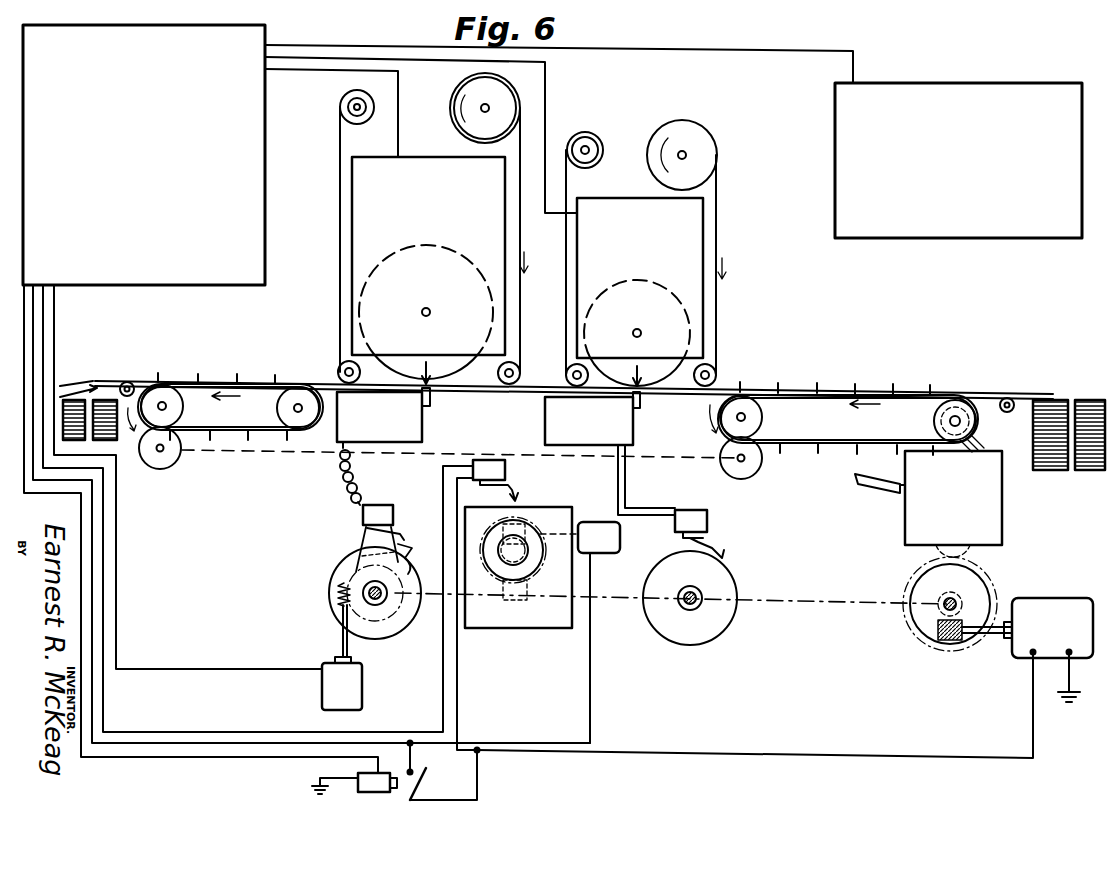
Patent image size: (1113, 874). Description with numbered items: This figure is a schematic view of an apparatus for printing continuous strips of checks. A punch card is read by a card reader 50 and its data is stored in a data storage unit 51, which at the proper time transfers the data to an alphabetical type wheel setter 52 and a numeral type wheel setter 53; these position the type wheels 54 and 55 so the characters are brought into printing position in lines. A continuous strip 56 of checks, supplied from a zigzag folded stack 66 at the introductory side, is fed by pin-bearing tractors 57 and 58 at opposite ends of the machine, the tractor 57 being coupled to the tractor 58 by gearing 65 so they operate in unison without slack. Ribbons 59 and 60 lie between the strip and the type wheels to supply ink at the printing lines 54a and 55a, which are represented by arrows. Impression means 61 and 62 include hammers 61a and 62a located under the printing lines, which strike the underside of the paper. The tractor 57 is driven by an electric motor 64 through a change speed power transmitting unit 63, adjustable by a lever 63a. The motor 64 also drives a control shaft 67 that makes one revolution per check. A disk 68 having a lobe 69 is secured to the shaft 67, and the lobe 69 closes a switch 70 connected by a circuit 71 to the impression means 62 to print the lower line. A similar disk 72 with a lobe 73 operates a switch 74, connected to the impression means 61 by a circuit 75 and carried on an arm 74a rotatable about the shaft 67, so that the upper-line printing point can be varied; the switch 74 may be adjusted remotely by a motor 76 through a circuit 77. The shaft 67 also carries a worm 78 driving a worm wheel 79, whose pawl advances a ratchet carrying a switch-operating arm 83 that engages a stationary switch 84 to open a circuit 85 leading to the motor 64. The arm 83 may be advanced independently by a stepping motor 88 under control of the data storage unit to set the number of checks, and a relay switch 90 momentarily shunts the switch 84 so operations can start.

The card reader 50 is at (918, 233).
The data storage unit 51 is at (131, 286).
The alphabetical type wheel setter 52 is at (419, 157).
The numeral type wheel setter 53 is at (632, 197).
The alphabetical type wheel 54 is at (343, 358).
The printing line 54a is at (431, 368).
The numeral type wheel 55 is at (660, 362).
The printing line 55a is at (636, 370).
The continuous strip 56 is at (992, 390).
The pin-bearing tractor 57 is at (832, 393).
The pin-bearing tractor 58 is at (182, 375).
The ribbon 59 is at (522, 366).
The ribbon 60 is at (716, 306).
The impression means 61 is at (422, 431).
The hammer 61a is at (430, 396).
The impression means 62 is at (633, 436).
The hammer 62a is at (640, 400).
The power transmitting means 63 is at (1002, 515).
The lever 63a is at (870, 489).
The electric motor 64 is at (1050, 608).
The gearing 65 is at (166, 470).
The zigzag folded stack 66 is at (1090, 470).
The shaft 67 is at (826, 601).
The disk 68 is at (705, 641).
The lobe 69 is at (730, 556).
The switch 70 is at (707, 518).
The circuit 71 is at (626, 478).
The disk 72 is at (385, 630).
The lobe 73 is at (412, 556).
The switch 74 is at (378, 512).
The arm 74a is at (362, 540).
The circuit 75 is at (335, 481).
The electric motor 76 is at (350, 690).
The circuit 77 is at (247, 669).
The worm 78 is at (535, 576).
The worm wheel 79 is at (492, 572).
The switch-operating arm 83 is at (517, 497).
The stationary switch 84 is at (505, 466).
The circuit 85 is at (454, 670).
The stepping motor 88 is at (603, 548).
The relay switch 90 is at (434, 789).